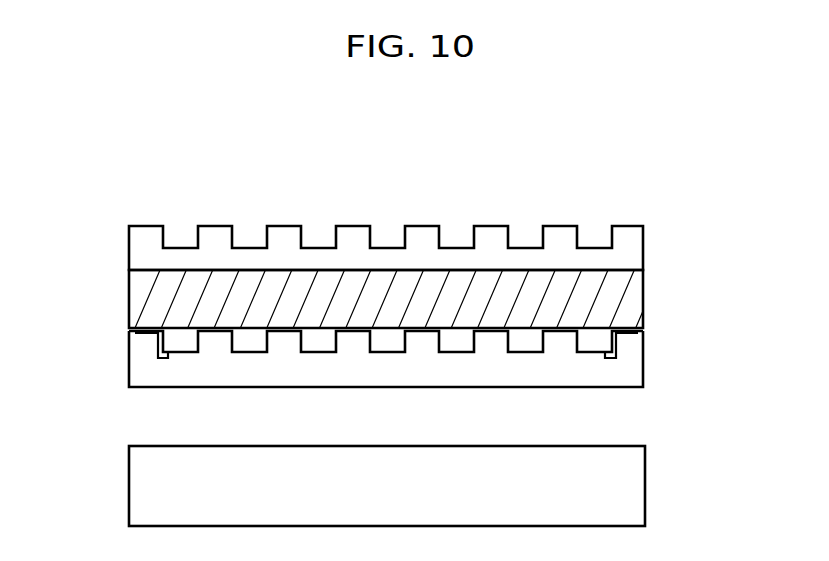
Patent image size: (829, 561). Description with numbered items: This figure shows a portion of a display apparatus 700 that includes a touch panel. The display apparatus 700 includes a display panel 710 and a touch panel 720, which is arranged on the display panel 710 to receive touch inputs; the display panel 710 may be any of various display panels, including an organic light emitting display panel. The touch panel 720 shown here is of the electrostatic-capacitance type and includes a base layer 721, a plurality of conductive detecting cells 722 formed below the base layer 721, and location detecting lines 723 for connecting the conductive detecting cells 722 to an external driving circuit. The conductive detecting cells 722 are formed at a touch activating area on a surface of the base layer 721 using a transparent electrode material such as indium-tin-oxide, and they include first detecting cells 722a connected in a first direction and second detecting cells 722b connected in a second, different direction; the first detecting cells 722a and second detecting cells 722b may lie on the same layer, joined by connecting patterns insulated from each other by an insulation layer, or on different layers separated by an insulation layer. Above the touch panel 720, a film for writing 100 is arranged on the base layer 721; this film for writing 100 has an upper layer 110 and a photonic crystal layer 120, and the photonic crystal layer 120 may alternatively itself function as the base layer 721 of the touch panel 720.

The display apparatus 700 is at (634, 190).
The film for writing 100 is at (69, 242).
The base substrate 110 is at (134, 253).
The photonic crystal layer 120 is at (134, 305).
The touch panel 720 is at (757, 297).
The base layer 721 is at (631, 304).
The location detecting lines 723 is at (615, 339).
The conductive detecting cells 722 is at (705, 370).
The first detecting cells 722a is at (585, 347).
The second detecting cells 722b is at (520, 344).
The display panel 710 is at (633, 491).